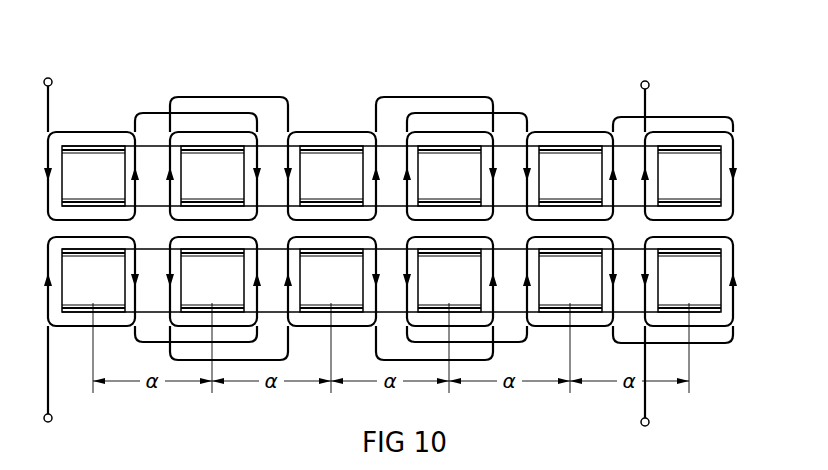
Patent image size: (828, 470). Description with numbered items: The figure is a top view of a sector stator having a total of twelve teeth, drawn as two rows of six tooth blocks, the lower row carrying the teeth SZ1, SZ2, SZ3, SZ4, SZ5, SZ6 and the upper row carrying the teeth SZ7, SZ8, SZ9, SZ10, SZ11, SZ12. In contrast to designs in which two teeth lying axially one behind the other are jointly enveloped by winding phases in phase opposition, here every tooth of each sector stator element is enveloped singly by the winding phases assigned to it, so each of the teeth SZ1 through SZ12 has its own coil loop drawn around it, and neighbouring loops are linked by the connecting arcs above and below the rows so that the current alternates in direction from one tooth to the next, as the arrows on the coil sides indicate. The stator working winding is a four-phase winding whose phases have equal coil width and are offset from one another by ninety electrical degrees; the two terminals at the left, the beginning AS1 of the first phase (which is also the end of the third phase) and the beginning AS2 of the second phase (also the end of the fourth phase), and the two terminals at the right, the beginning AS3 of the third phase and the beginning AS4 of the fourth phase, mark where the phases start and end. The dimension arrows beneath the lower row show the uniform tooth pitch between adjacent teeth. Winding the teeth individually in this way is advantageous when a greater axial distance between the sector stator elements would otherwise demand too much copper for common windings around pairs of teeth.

The coil branch 1 SZ1 is at (93, 280).
The coil branch 2 SZ2 is at (212, 280).
The coil branch 3 SZ3 is at (331, 280).
The coil branch 4 SZ4 is at (449, 280).
The coil branch 5 SZ5 is at (570, 280).
The coil branch 6 SZ6 is at (689, 280).
The coil branch 7 SZ7 is at (93, 176).
The coil branch 8 SZ8 is at (212, 176).
The coil branch 9 SZ9 is at (331, 176).
The coil branch 10 SZ10 is at (449, 176).
The coil branch 11 SZ11 is at (570, 176).
The coil branch 12 SZ12 is at (689, 176).
The winding terminal AS1/ES3 AS1 is at (91, 69).
The winding terminal AS2/ES4 AS2 is at (90, 427).
The winding terminal AS3/ES1 AS3 is at (684, 72).
The winding terminal AS4/ES2 AS4 is at (687, 431).